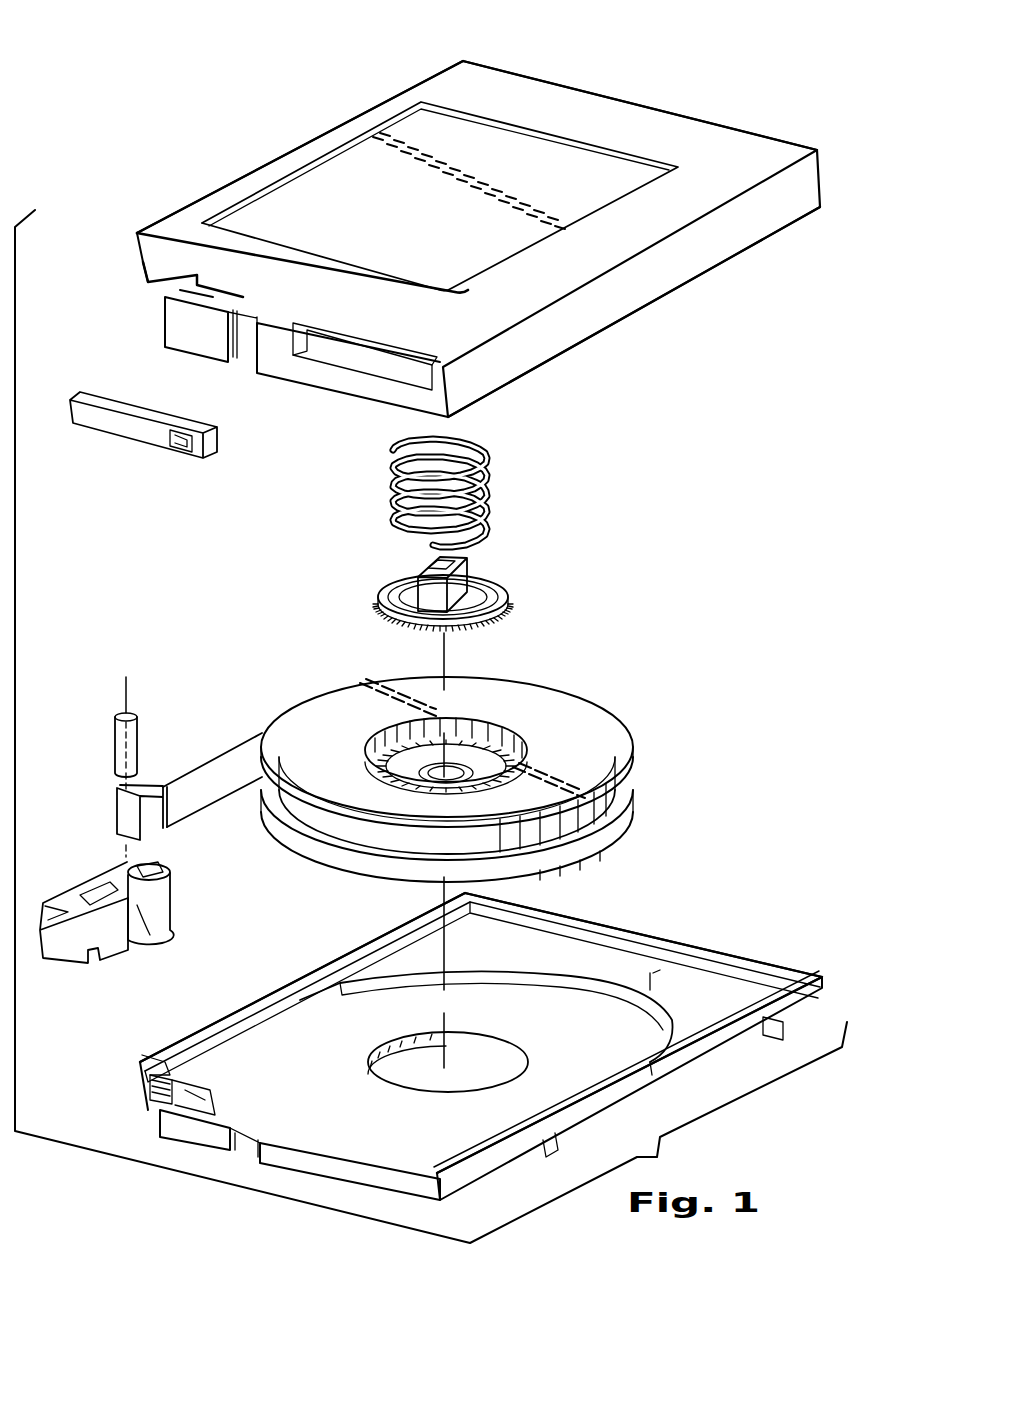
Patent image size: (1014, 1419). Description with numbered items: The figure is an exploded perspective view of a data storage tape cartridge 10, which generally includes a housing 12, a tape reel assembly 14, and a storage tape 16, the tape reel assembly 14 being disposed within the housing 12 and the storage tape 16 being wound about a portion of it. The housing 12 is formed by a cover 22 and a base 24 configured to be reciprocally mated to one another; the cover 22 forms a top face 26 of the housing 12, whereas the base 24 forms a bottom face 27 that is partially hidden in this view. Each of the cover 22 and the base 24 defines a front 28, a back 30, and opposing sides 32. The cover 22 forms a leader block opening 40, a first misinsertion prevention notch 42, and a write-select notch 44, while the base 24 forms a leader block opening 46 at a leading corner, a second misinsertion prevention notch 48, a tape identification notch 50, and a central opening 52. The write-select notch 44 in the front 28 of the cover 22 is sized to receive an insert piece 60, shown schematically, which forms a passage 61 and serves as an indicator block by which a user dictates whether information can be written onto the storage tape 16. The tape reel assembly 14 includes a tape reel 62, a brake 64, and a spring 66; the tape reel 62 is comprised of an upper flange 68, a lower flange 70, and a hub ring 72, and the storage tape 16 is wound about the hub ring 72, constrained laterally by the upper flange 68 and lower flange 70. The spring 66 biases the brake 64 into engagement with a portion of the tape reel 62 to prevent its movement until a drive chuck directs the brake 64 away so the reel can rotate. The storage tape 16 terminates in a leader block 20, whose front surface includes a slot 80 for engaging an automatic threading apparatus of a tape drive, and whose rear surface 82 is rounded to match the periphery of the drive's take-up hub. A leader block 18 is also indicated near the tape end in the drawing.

The data storage tape cartridge 10 is at (772, 84).
The housing 12 is at (775, 128).
The tape reel assembly 14 is at (500, 555).
The storage tape 16 is at (231, 763).
The leader block 18 is at (130, 810).
The leader block 20 is at (149, 891).
The cover 22 is at (617, 104).
The base 24 is at (733, 946).
The top face 26 is at (752, 160).
The bottom face 27 is at (710, 1078).
The front 28 is at (207, 340).
The back 30 is at (703, 118).
The opposing sides 32 is at (327, 137).
The leader block opening 40 is at (137, 263).
The first misinsertion prevention notch 42 is at (247, 312).
The write-select notch 44 is at (367, 347).
The leader block opening 46 is at (150, 1083).
The second misinsertion prevention notch 48 is at (250, 1143).
The tape identification notch 50 is at (500, 1170).
The central opening 52 is at (493, 1043).
The insert piece 60 is at (118, 430).
The passage 61 is at (180, 450).
The tape reel 62 is at (483, 747).
The brake 64 is at (505, 595).
The spring 66 is at (480, 458).
The upper flange 68 is at (598, 722).
The lower flange 70 is at (618, 798).
The hub ring 72 is at (480, 737).
The slot 80 is at (158, 928).
The rear surface 82 is at (170, 890).